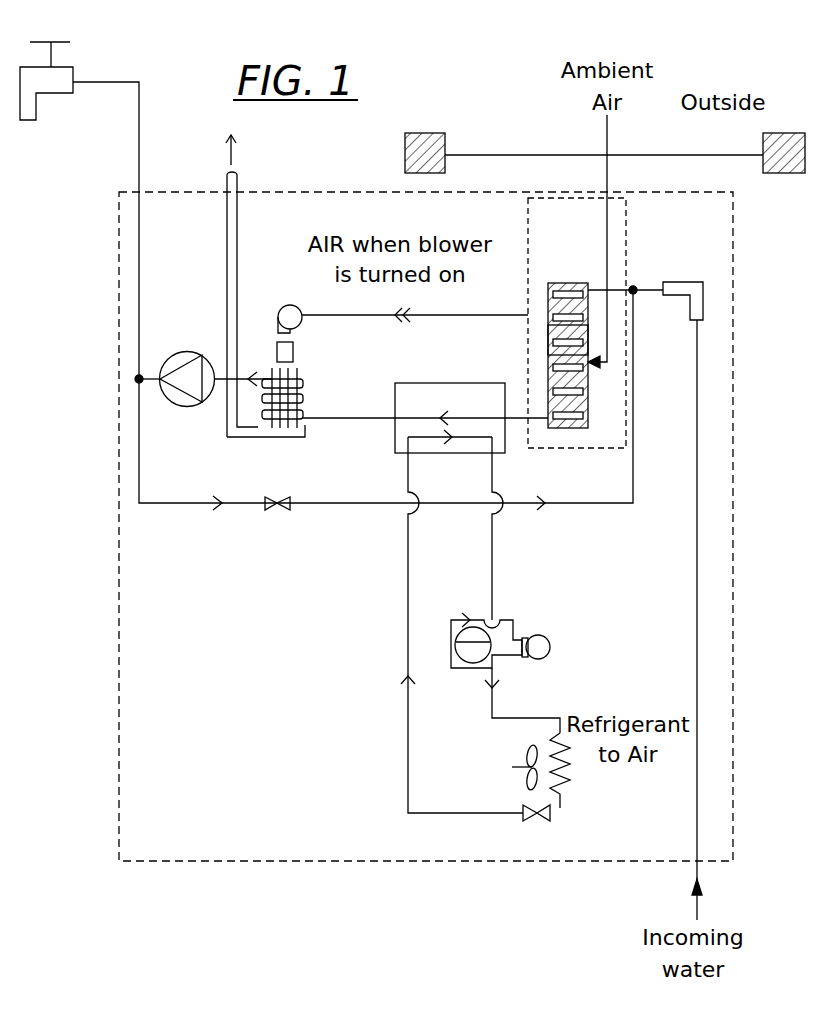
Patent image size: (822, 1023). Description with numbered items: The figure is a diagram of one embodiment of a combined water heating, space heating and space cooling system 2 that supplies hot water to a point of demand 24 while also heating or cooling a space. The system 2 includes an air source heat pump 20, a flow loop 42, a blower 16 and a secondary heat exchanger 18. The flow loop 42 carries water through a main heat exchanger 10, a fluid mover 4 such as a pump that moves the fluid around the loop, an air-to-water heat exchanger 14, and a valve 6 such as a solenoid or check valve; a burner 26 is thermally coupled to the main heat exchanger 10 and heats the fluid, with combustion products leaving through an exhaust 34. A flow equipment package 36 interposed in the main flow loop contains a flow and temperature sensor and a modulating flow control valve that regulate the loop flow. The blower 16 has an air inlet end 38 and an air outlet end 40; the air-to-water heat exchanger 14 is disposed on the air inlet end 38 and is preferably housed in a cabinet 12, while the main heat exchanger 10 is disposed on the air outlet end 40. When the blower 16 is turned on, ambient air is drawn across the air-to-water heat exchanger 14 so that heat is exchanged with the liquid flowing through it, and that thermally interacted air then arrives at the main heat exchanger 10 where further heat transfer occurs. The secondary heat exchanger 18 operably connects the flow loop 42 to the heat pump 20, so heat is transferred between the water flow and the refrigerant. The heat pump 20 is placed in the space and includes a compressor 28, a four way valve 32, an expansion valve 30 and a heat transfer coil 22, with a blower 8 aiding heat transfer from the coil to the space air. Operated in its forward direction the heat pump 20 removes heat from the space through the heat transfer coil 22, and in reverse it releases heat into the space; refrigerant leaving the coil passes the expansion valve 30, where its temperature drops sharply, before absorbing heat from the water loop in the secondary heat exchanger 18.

The combined water heating, space heating and space cooling system 2 is at (252, 862).
The fluid mover 4 is at (178, 353).
The valve 6 is at (273, 497).
The blower of air source heat pump 8 is at (512, 767).
The heat exchanger 10 is at (270, 368).
The cabinet 12 is at (547, 198).
The air-to-water heat exchanger 14 is at (554, 335).
The blower 16 is at (290, 305).
The secondary heat exchanger 18 is at (452, 382).
The air source heat pump 20 is at (408, 748).
The heat transfer coil 22 is at (560, 795).
The point of demand 24 is at (36, 108).
The burner 26 is at (293, 352).
The compressor 28 is at (540, 659).
The expansion valve 30 is at (532, 820).
The four way valve 32 is at (451, 648).
The exhaust 34 is at (226, 174).
The flow equipment package 36 is at (678, 282).
The air inlet end 38 is at (588, 392).
The air outlet end 40 is at (548, 336).
The flow loop 42 is at (372, 418).